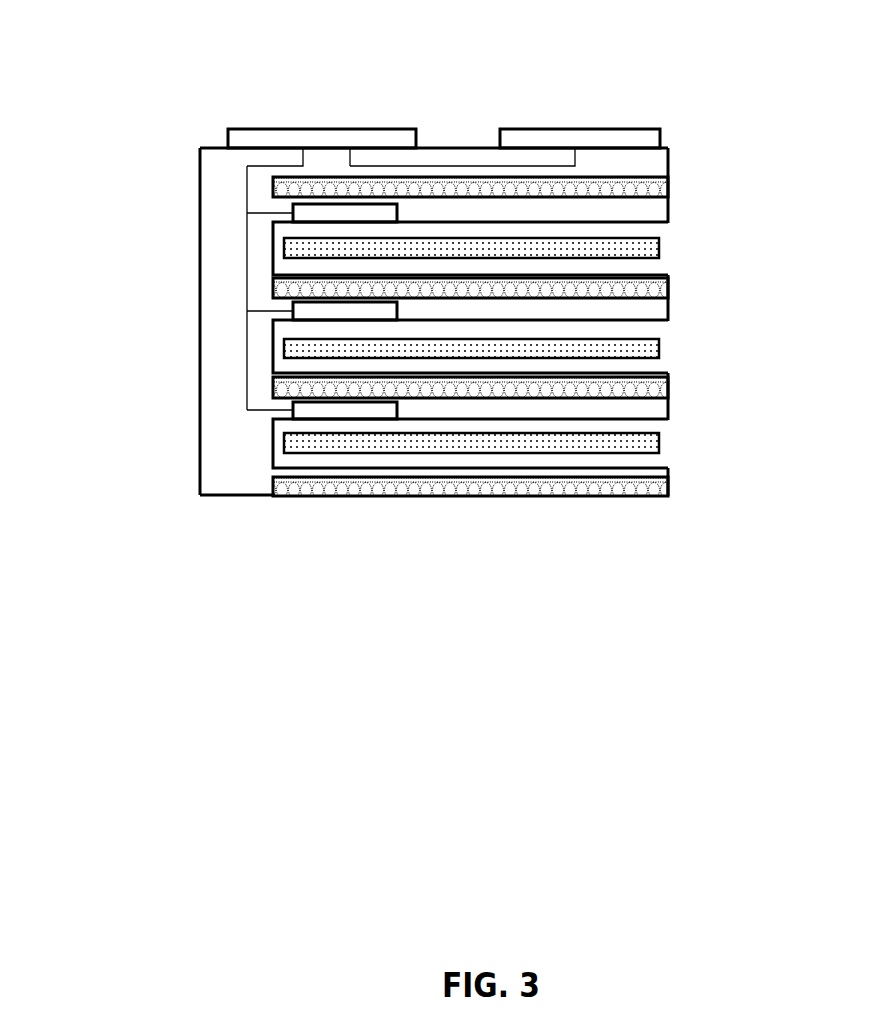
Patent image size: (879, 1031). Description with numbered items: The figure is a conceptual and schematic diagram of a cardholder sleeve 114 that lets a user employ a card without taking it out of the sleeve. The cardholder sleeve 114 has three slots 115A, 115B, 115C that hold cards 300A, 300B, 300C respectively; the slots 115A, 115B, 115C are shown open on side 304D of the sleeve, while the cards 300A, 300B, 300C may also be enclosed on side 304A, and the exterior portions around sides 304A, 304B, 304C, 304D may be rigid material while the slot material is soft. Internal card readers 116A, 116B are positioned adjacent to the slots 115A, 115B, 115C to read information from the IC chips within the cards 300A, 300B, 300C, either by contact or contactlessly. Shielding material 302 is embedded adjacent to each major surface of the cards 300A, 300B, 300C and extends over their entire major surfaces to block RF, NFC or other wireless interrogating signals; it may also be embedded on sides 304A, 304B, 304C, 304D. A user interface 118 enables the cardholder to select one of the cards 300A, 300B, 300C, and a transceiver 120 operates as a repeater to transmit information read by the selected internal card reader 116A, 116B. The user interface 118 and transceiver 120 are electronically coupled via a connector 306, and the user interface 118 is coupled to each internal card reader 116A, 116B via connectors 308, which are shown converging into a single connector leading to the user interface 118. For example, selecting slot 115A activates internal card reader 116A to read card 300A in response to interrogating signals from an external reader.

The cardholder sleeve 114 is at (217, 53).
The user interface 118 is at (320, 128).
The transceiver 120 is at (638, 128).
The side of cardholder sleeve 304A is at (434, 147).
The side of cardholder sleeve 304B is at (200, 170).
The side of cardholder sleeve 304C is at (495, 487).
The side of cardholder sleeve 304D is at (668, 172).
The connector 306 is at (465, 160).
The connectors 308 is at (247, 263).
The slot 115A is at (698, 226).
The slot 115B is at (688, 324).
The slot 115C is at (688, 419).
The internal card reader 116A is at (322, 212).
The internal card reader 116B is at (318, 310).
The card 300A is at (660, 257).
The card 300B is at (660, 357).
The card 300C is at (660, 453).
The shielding material 302 is at (333, 485).